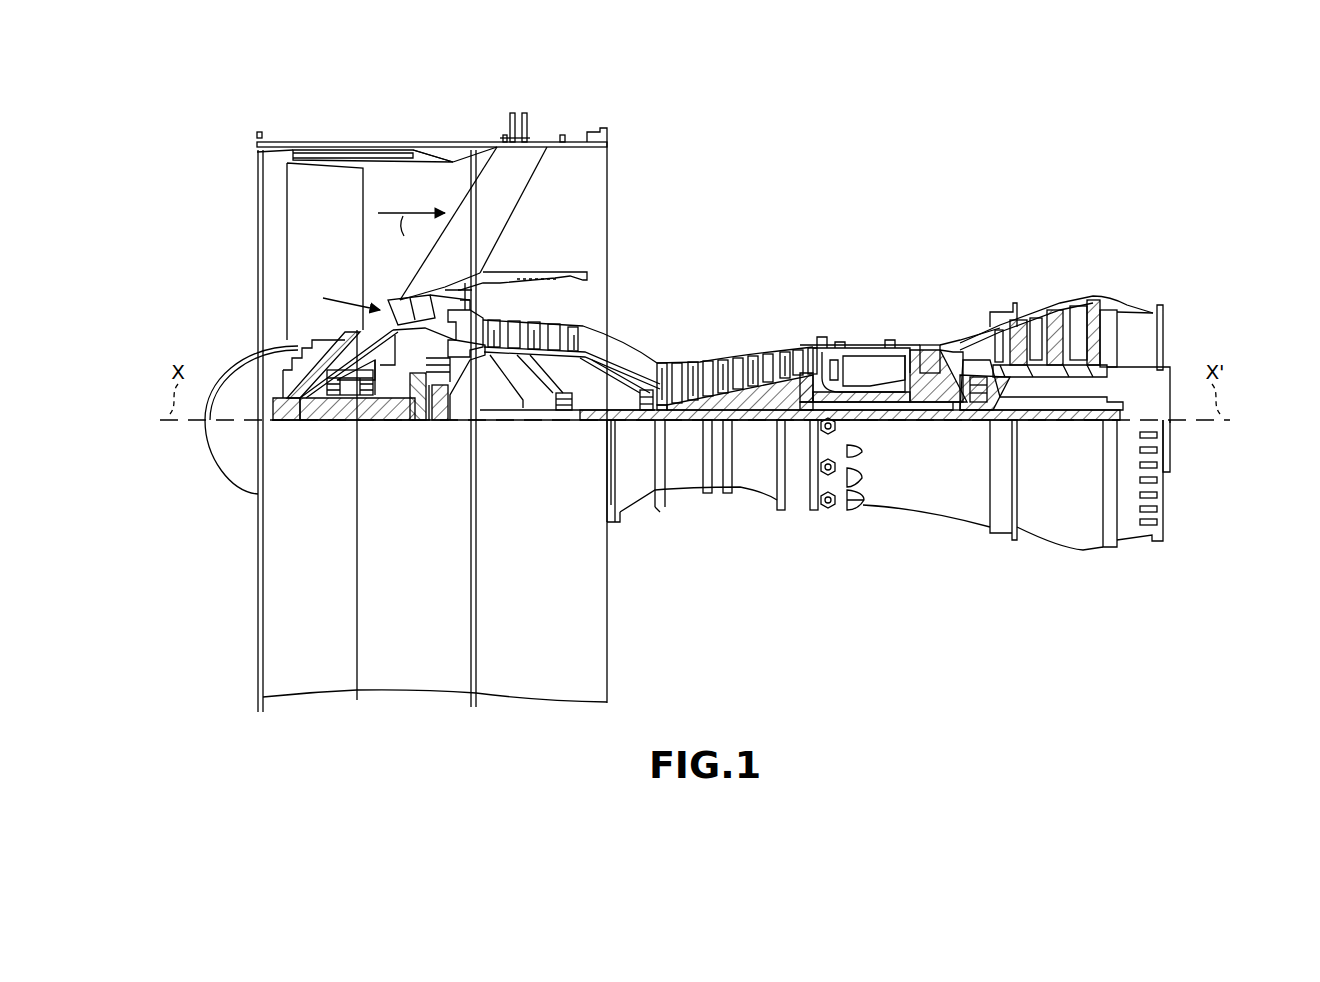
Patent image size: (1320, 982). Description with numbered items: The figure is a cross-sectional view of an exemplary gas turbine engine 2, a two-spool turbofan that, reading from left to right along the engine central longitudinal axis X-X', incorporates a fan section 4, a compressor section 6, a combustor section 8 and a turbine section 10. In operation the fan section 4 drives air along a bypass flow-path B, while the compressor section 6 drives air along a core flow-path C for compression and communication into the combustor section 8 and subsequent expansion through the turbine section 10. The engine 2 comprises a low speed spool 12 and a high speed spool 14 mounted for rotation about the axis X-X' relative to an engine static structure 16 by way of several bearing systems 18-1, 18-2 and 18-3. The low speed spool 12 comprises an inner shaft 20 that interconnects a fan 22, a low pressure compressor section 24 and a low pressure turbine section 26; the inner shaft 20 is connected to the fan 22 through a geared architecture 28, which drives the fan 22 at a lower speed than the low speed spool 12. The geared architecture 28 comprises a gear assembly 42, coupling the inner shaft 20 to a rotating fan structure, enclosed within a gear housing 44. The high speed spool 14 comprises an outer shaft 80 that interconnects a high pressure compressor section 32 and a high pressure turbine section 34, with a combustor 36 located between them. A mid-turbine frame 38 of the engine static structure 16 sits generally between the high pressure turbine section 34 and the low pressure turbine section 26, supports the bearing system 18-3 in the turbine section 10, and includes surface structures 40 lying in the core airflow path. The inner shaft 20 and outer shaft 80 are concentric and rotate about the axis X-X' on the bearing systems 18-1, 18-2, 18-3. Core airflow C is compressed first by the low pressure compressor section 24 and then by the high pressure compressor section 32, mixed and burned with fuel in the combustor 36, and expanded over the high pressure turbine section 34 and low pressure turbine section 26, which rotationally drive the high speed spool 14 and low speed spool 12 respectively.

The gas turbine engine 2 is at (908, 175).
The fan section 4 is at (473, 125).
The compressor section 6 is at (480, 242).
The combustor section 8 is at (817, 242).
The turbine section 10 is at (1108, 242).
The low speed spool 12 is at (760, 432).
The high speed spool 14 is at (795, 388).
The engine static structure 16 is at (398, 683).
The bearing system 18-1 is at (336, 404).
The bearing system 18-2 is at (563, 416).
The bearing system 18-3 is at (963, 418).
The inner shaft 20 is at (626, 428).
The fan 22 is at (310, 255).
The low pressure compressor section 24 is at (548, 328).
The low pressure turbine section 26 is at (1040, 312).
The geared architecture 28 is at (440, 440).
The high pressure compressor section 32 is at (745, 362).
The high pressure turbine section 34 is at (930, 345).
The combustor 36 is at (868, 364).
The mid-turbine frame 38 is at (963, 350).
The surface structures 40 is at (978, 368).
The gear assembly 42 is at (447, 400).
The gear housing 44 is at (445, 370).
The outer shaft 80 is at (860, 410).